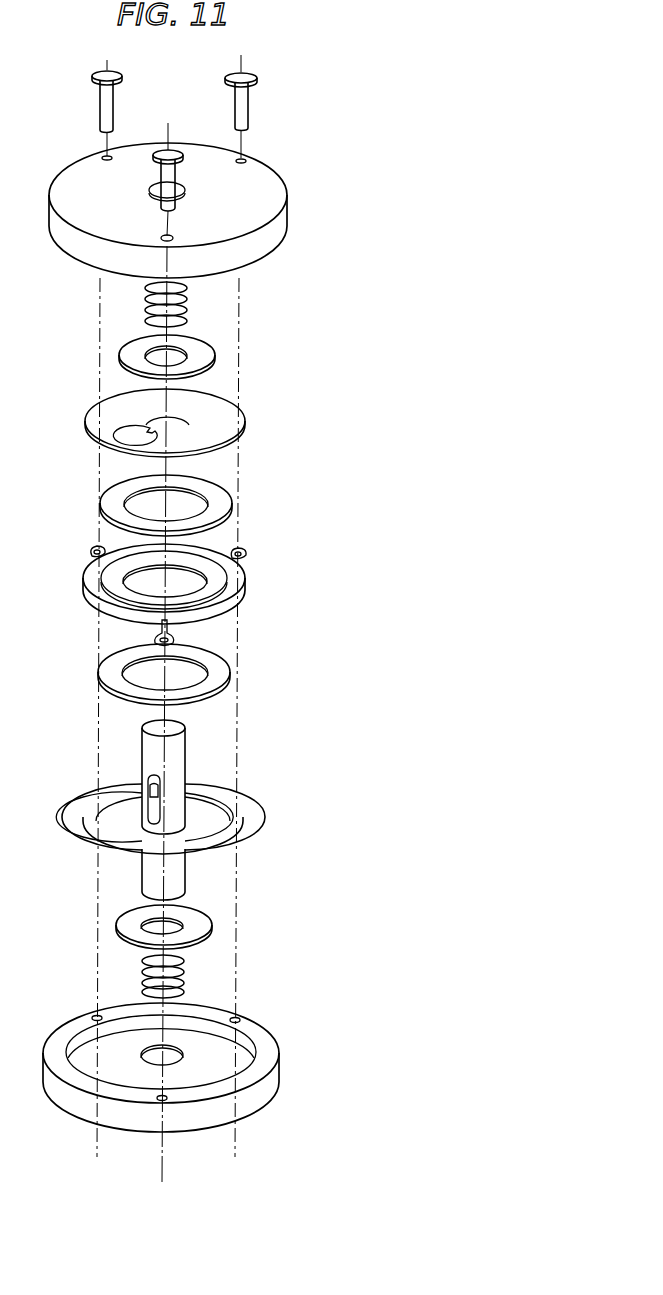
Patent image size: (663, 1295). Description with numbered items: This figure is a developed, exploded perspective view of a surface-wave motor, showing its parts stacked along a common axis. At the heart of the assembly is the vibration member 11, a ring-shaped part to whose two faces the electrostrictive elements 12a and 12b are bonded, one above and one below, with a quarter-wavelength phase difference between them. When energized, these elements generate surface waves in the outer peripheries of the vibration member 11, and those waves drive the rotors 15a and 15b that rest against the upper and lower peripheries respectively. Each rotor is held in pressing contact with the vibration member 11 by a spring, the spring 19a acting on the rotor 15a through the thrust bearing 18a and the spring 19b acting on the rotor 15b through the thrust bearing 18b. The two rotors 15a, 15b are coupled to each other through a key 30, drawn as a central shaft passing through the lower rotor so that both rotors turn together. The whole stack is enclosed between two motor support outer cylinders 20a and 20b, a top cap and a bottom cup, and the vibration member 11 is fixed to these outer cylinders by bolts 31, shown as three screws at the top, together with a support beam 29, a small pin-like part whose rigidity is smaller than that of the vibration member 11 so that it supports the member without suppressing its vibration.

The bolts 31 is at (168, 150).
The motor support outer cylinder 20a is at (273, 186).
The spring 19a is at (187, 300).
The thrust bearing 18a is at (207, 352).
The rotor 15a is at (237, 420).
The electrostrictive element 12a is at (225, 503).
The vibration member 11 is at (240, 593).
The support beam 29 is at (175, 639).
The electrostrictive element 12b is at (226, 668).
The key 30 is at (152, 790).
The rotor 15b is at (238, 817).
The thrust bearing 18b is at (203, 924).
The spring 19b is at (185, 975).
The motor support outer cylinder 20b is at (270, 1048).